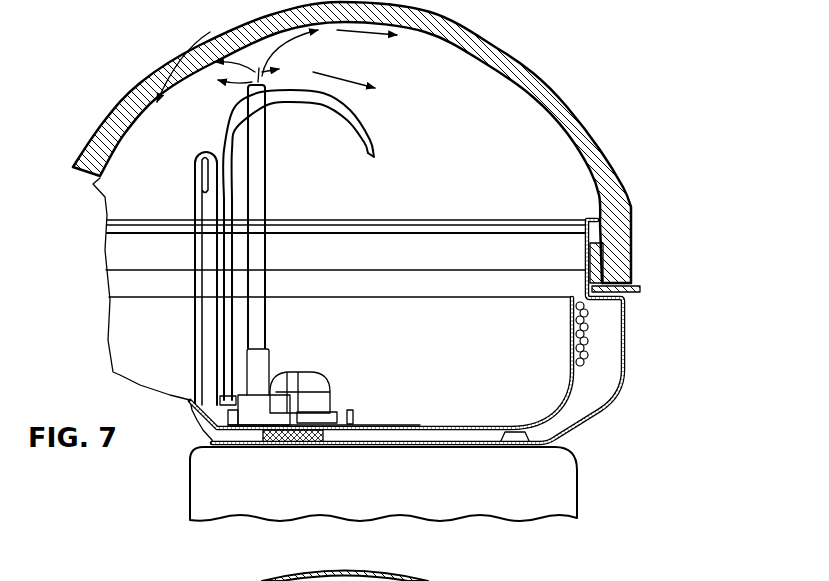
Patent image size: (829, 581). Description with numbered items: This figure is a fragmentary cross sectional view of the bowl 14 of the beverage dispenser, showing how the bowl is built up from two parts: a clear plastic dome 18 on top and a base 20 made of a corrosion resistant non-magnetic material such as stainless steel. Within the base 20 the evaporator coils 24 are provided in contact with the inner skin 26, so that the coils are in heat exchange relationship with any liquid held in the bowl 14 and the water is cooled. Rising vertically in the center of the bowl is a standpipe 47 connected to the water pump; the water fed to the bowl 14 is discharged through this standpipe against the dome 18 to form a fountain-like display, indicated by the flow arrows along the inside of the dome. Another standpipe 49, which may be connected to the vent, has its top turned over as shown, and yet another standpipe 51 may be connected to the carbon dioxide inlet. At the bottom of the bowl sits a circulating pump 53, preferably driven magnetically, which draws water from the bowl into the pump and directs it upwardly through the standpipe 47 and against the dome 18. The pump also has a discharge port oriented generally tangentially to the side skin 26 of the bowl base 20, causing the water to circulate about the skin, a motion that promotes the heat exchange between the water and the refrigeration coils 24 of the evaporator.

The bowl 14 is at (374, 147).
The dome 18 is at (533, 71).
The base 20 is at (626, 355).
The evaporator coils 24 is at (585, 338).
The inner skin 26 is at (568, 338).
The standpipe 47 is at (261, 196).
The standpipe 49 is at (377, 143).
The standpipe 51 is at (200, 160).
The circulating pump 53 is at (323, 372).